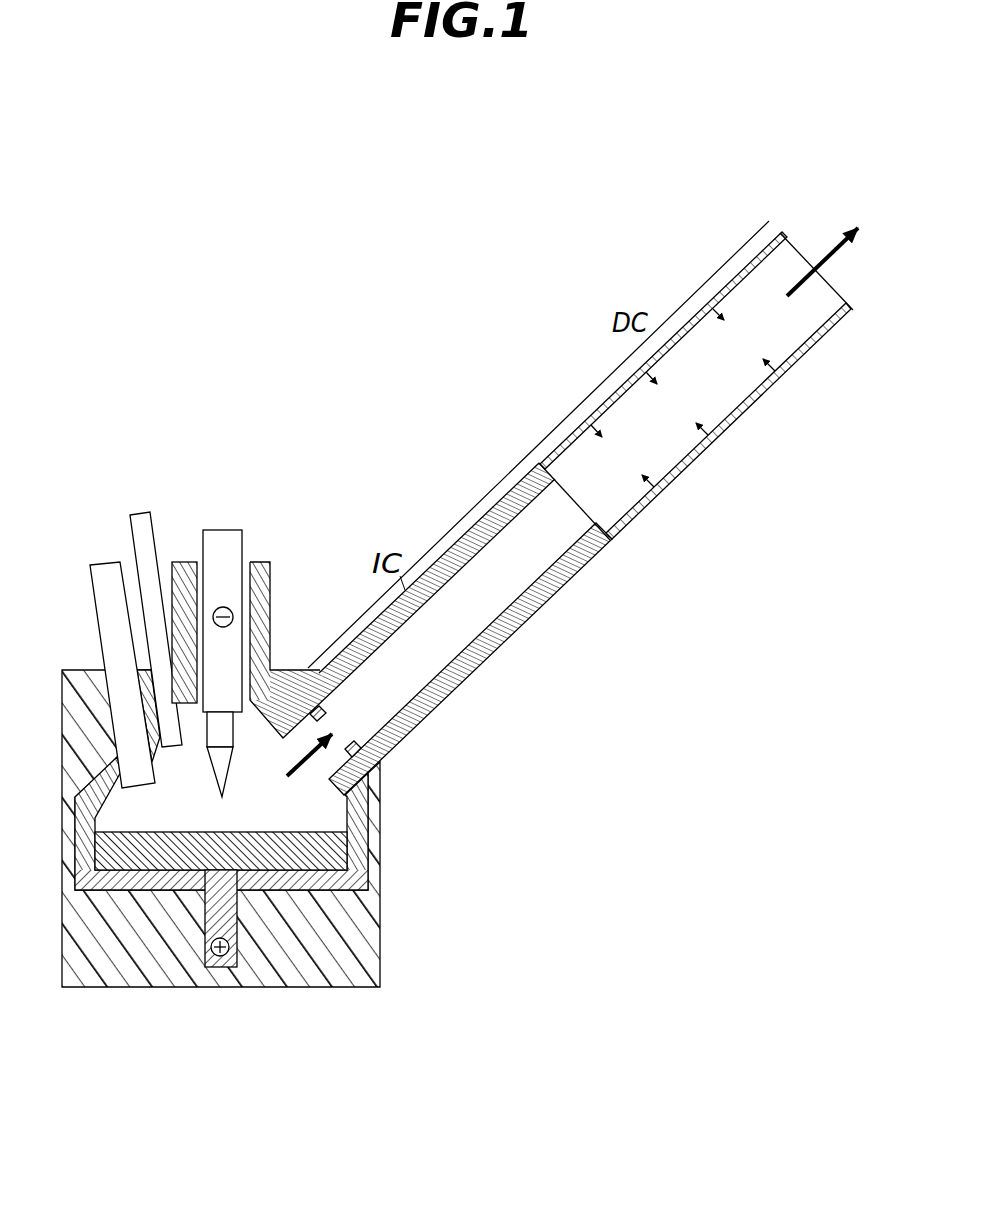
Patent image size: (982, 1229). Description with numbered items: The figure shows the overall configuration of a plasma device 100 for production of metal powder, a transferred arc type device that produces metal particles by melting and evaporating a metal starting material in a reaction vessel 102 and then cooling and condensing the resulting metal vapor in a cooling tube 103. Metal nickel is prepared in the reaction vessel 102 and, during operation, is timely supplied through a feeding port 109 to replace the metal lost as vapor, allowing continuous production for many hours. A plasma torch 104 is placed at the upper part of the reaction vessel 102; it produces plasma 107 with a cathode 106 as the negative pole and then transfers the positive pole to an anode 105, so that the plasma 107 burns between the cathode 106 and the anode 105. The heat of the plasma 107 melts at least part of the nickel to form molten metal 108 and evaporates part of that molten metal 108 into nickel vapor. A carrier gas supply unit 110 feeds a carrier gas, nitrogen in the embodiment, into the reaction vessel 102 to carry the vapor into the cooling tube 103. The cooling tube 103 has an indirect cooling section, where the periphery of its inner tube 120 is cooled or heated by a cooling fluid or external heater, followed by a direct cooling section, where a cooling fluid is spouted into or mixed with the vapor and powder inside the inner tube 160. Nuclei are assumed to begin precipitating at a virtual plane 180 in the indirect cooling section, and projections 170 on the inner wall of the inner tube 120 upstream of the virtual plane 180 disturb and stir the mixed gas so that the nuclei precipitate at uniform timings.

The plasma device 100 is at (482, 172).
The reaction vessel 102 is at (372, 843).
The cooling tube 103 is at (720, 252).
The plasma torch 104 is at (272, 668).
The anode 105 is at (218, 968).
The cathode 106 is at (226, 528).
The plasma 107 is at (228, 765).
The molten metal 108 is at (135, 830).
The feeding port 109 is at (105, 563).
The carrier gas supply unit 110 is at (135, 510).
The inner tube 120 is at (517, 600).
The inner tube 160 is at (752, 408).
The projections 170 is at (353, 742).
The virtual plane 180 is at (436, 592).